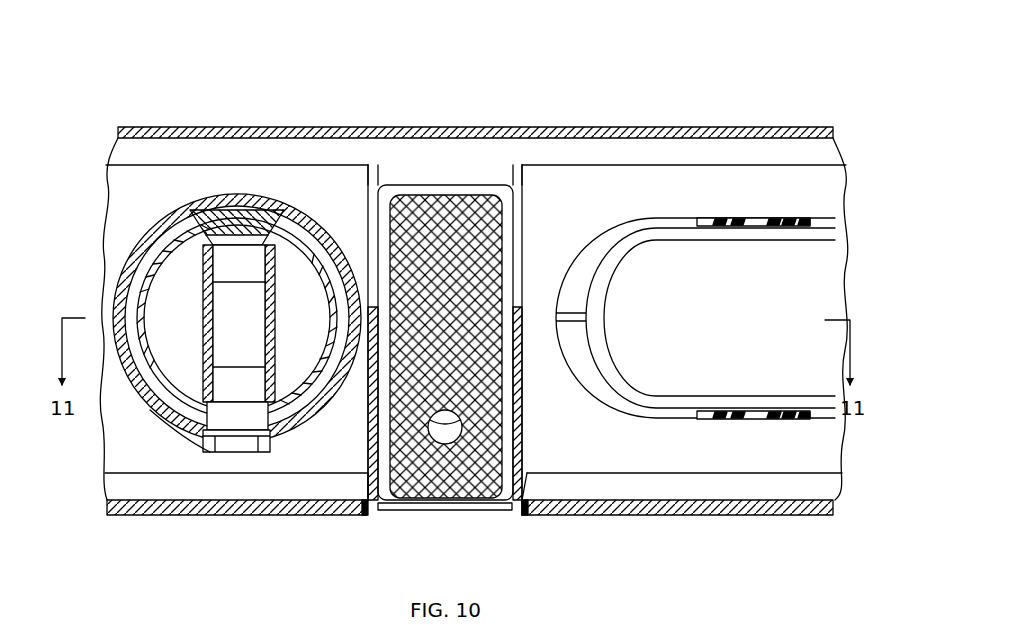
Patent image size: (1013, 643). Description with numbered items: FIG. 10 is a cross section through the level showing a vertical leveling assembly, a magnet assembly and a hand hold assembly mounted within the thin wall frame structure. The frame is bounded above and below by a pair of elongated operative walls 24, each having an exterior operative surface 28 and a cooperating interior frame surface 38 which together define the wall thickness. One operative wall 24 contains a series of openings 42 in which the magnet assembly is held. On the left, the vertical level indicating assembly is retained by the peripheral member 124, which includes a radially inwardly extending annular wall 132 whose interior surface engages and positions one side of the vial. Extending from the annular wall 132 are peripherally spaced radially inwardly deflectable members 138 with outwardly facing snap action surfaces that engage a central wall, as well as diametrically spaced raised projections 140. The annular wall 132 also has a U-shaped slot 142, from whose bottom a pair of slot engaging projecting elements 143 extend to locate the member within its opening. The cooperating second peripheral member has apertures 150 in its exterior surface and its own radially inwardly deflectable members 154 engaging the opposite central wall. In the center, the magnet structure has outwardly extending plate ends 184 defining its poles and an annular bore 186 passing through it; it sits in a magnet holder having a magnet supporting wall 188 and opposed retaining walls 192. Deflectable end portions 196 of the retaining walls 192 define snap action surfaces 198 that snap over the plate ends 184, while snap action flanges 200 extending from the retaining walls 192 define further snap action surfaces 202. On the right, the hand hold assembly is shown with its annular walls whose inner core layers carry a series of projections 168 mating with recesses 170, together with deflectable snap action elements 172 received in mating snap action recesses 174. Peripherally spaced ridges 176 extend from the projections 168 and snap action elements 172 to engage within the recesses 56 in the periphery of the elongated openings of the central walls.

The operative wall 24 is at (340, 128).
The exterior operative surface 28 is at (712, 516).
The interior frame surface 38 is at (828, 497).
The opening 42 is at (372, 517).
The recess 56 is at (714, 218).
The peripheral member 124 is at (240, 190).
The annular wall 132 is at (115, 275).
The radially inwardly deflectable member 138 is at (158, 222).
The raised projection 140 is at (320, 225).
The U-shaped slot 142 is at (228, 455).
The slot engaging projecting element 143 is at (205, 450).
The aperture 150 is at (480, 272).
The radially inwardly deflectable member 154 is at (210, 452).
The projection 168 is at (722, 224).
The mating recess 170 is at (707, 410).
The snap action element 172 is at (778, 224).
The snap action recess 174 is at (800, 228).
The ridge 176 is at (788, 215).
The plate end 184 is at (451, 187).
The annular bore 186 is at (445, 435).
The magnet supporting wall 188 is at (462, 508).
The retaining wall 192 is at (519, 385).
The deflectable end portion 196 is at (373, 177).
The snap action surface 198 is at (397, 182).
The snap action flange 200 is at (368, 495).
The snap action surface 202 is at (362, 510).